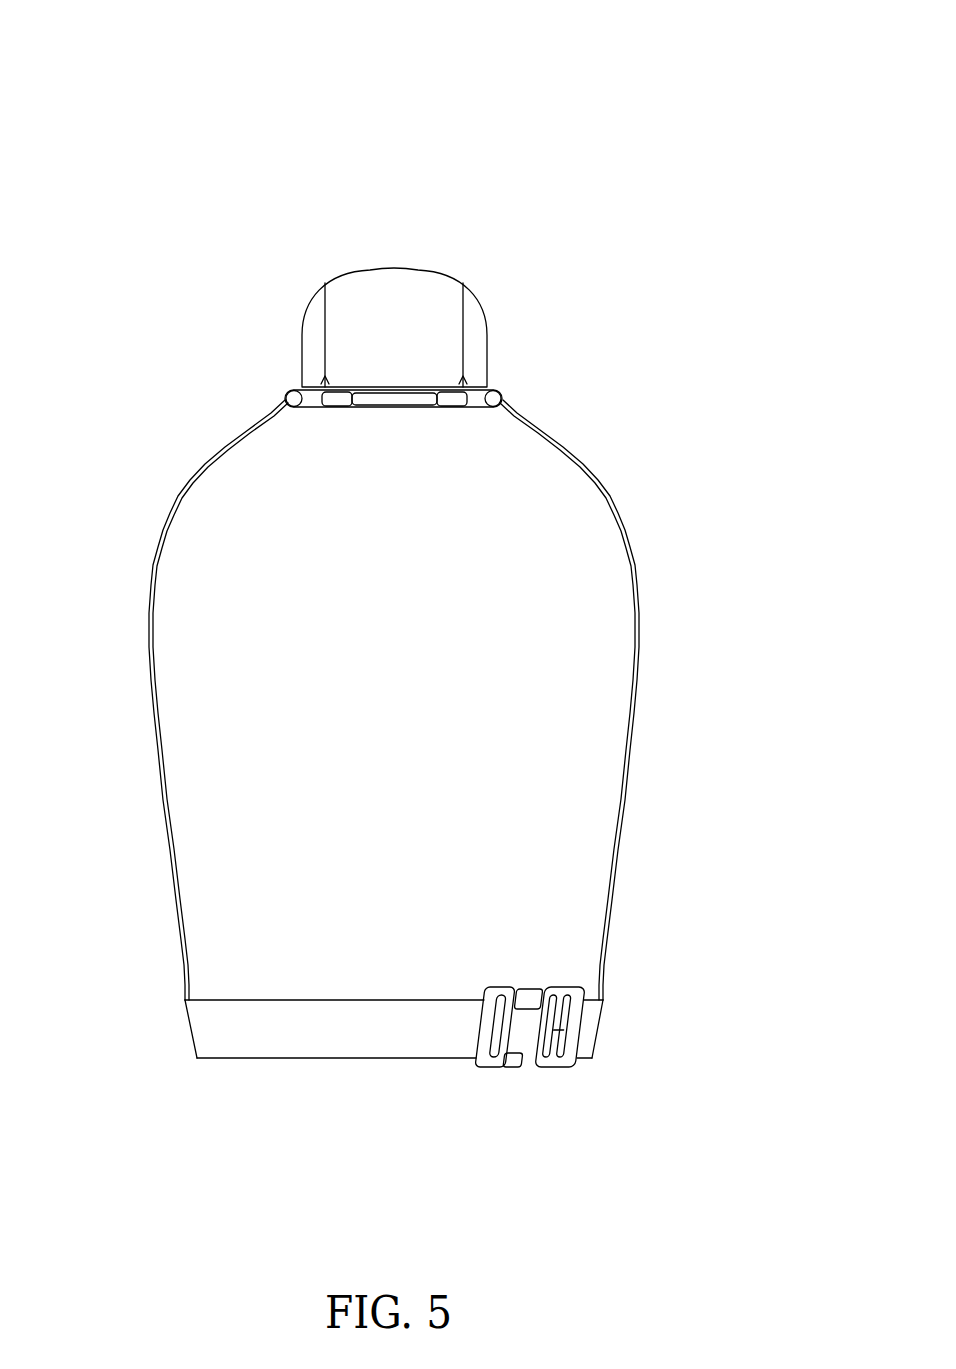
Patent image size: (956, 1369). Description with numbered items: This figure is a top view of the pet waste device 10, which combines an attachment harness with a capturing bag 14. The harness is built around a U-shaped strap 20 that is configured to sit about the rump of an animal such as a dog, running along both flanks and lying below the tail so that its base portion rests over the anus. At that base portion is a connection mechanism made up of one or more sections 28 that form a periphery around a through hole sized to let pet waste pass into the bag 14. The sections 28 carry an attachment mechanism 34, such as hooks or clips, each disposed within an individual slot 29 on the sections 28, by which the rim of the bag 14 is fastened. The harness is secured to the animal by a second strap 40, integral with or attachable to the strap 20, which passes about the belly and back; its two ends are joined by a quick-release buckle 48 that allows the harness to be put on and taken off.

The pet waste device 10 is at (87, 174).
The bag 14 is at (403, 283).
The strap 20 is at (640, 684).
The sections 28 is at (395, 408).
The slot 29 is at (325, 408).
The attachment mechanism 34 is at (323, 406).
The strap 40 is at (394, 1030).
The quick-release buckle 48 is at (543, 1043).